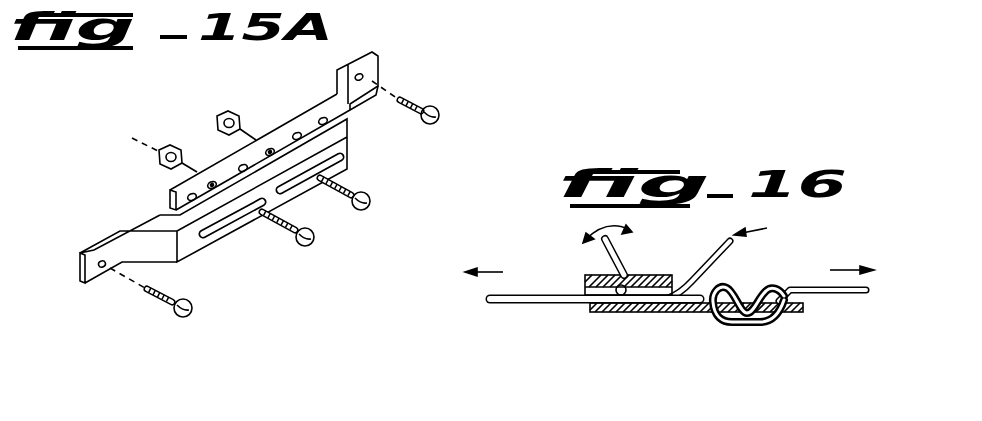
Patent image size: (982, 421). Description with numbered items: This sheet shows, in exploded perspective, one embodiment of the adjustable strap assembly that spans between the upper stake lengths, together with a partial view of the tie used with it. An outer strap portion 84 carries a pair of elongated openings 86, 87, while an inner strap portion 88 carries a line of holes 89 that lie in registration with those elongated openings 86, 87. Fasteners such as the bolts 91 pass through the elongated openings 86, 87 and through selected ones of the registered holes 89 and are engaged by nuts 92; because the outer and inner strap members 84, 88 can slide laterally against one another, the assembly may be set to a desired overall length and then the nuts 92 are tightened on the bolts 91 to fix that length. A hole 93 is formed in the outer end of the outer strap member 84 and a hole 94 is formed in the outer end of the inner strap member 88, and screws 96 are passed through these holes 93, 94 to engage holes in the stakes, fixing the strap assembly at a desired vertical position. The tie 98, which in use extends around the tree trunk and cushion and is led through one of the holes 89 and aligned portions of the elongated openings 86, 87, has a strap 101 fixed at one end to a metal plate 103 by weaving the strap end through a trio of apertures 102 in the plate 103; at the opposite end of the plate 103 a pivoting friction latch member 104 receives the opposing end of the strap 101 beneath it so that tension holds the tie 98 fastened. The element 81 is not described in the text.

In FIG. 15A, the screw 81 is at (371, 196).
In FIG. 15A, the outer strap portion 84 is at (182, 264).
In FIG. 15A, the elongated opening 86 is at (233, 226).
In FIG. 15A, the elongated opening 87 is at (303, 190).
In FIG. 15A, the inner strap portion 88 is at (350, 113).
In FIG. 15A, the holes 89 is at (187, 199).
In FIG. 15A, the bolts 91 is at (311, 247).
In FIG. 15A, the nuts 92 is at (217, 117).
In FIG. 15A, the hole 93 is at (104, 273).
In FIG. 15A, the hole 94 is at (374, 63).
In FIG. 15A, the screws 96 is at (439, 108).
In FIG. 16, the tie 98 is at (770, 226).
In FIG. 16, the strap 101 is at (522, 304).
In FIG. 16, the apertures 102 is at (732, 274).
In FIG. 16, the metal plate 103 is at (678, 314).
In FIG. 16, the friction latch member 104 is at (617, 252).